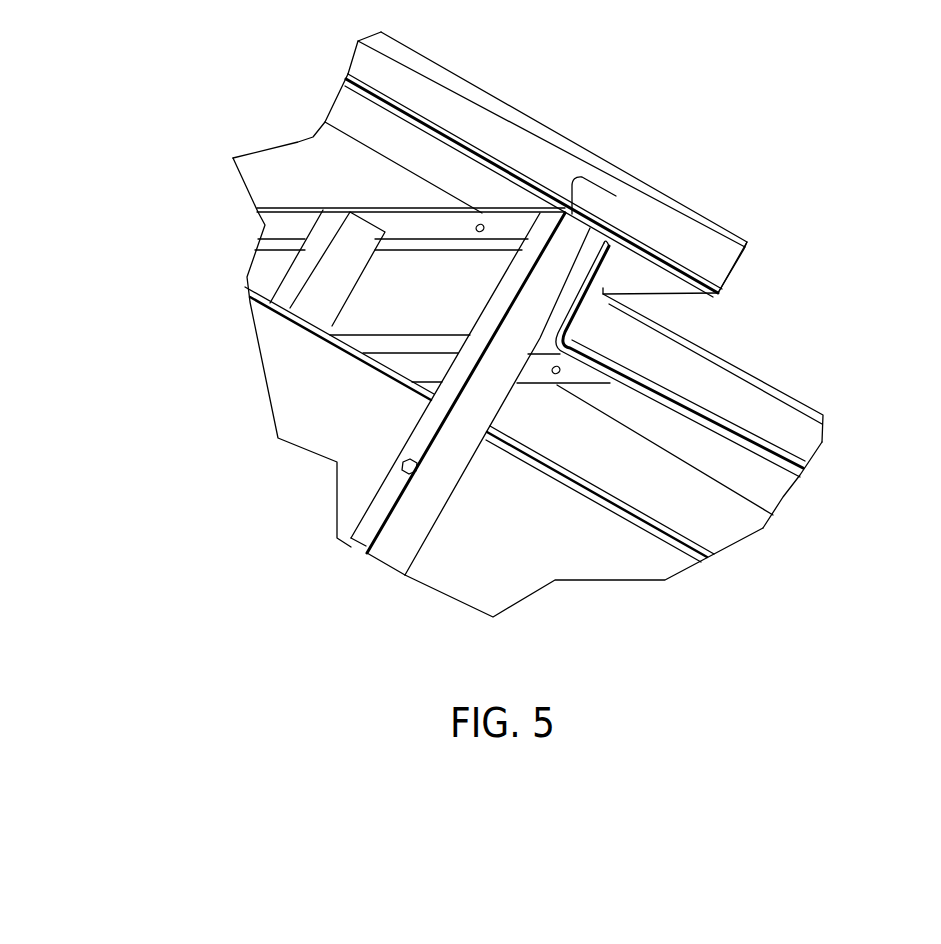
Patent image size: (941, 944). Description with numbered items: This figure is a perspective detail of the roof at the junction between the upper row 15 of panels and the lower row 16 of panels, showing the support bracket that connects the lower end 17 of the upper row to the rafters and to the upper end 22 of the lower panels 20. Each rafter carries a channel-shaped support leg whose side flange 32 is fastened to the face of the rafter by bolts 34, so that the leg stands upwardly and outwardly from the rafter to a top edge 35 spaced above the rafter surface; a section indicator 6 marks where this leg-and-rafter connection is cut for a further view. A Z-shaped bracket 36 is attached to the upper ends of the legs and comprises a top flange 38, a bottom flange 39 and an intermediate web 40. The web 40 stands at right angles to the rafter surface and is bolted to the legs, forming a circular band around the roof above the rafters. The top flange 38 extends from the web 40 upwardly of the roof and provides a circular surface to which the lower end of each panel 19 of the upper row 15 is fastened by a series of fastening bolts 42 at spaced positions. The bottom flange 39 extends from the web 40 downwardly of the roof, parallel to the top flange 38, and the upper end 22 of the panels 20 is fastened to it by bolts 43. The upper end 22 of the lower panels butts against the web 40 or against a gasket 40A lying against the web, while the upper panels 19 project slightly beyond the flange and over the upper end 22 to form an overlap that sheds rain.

The upper row 15 is at (617, 121).
The lower row 16 is at (822, 530).
The lower end 17 is at (680, 328).
The panel 19 is at (447, 153).
The panel 20 is at (718, 441).
The upper end 22 is at (647, 233).
The side flange 32 is at (364, 587).
The bolt 34 is at (410, 460).
The top edge 35 is at (572, 187).
The Z-shaped bracket 36 is at (358, 326).
The top flange 38 is at (392, 228).
The bottom flange 39 is at (541, 375).
The web 40 is at (387, 320).
The gasket 40A is at (605, 277).
The fastening bolt 42 is at (500, 184).
The bolt 43 is at (560, 378).
The section line FIG. 6 is at (630, 212).